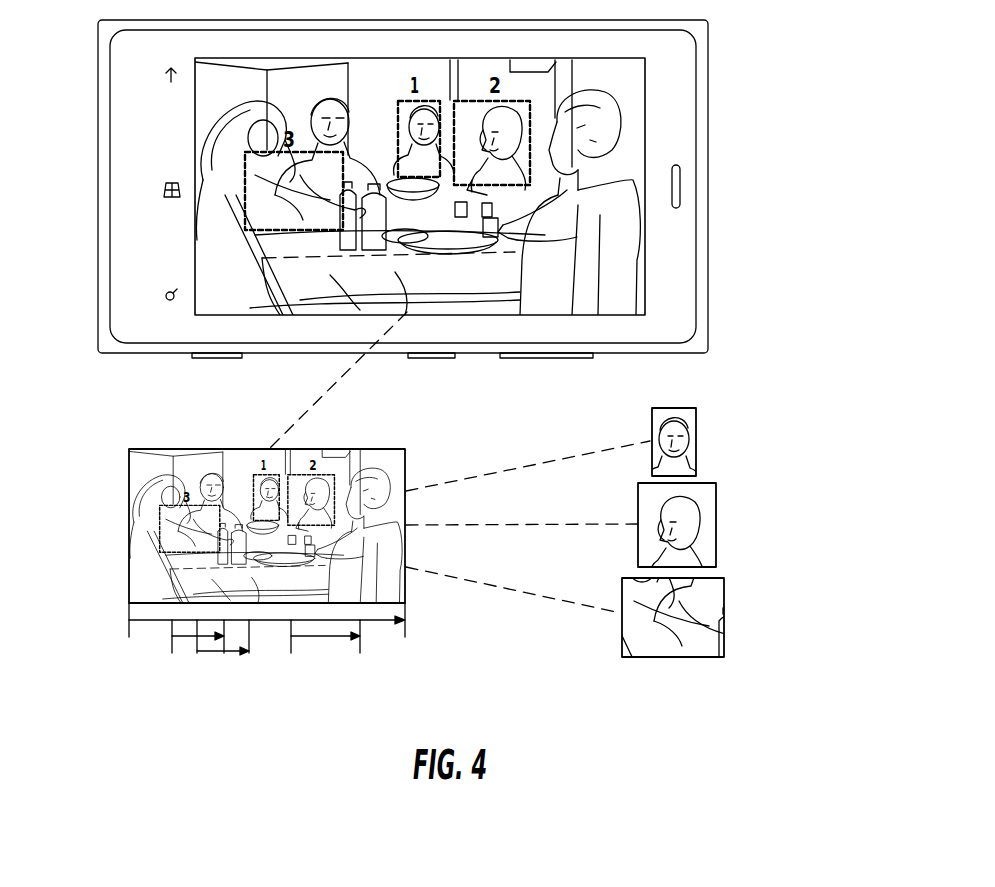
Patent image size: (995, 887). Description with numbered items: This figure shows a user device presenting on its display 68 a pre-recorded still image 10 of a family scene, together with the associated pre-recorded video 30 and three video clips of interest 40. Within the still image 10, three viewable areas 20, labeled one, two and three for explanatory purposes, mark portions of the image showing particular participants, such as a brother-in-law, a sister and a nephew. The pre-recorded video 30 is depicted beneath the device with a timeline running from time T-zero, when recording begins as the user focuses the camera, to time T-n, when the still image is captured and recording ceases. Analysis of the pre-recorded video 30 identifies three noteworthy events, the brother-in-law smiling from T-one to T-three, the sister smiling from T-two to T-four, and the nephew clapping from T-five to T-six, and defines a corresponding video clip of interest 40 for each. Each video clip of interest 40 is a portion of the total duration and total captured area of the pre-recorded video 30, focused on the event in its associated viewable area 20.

The pre-recorded still image 10 is at (399, 189).
The display 68 is at (196, 134).
The viewable area 20 is at (245, 205).
The pre-recorded video 30 is at (124, 473).
The video clip of interest 40 is at (703, 406).